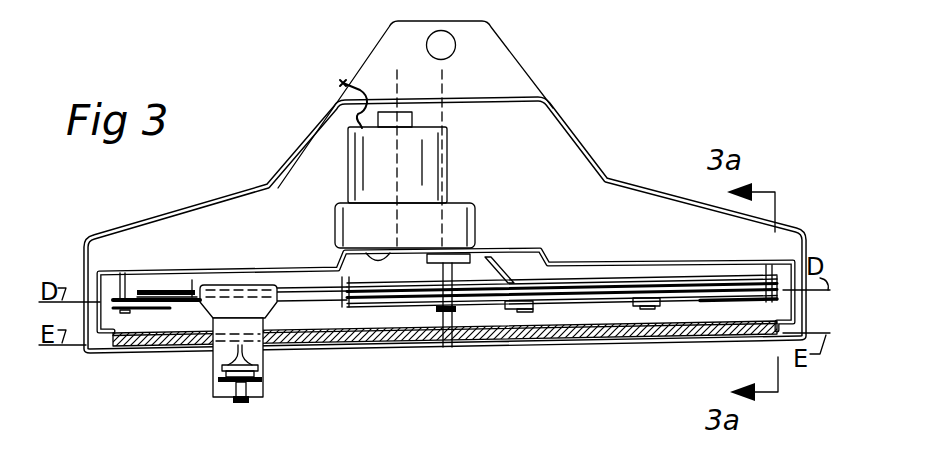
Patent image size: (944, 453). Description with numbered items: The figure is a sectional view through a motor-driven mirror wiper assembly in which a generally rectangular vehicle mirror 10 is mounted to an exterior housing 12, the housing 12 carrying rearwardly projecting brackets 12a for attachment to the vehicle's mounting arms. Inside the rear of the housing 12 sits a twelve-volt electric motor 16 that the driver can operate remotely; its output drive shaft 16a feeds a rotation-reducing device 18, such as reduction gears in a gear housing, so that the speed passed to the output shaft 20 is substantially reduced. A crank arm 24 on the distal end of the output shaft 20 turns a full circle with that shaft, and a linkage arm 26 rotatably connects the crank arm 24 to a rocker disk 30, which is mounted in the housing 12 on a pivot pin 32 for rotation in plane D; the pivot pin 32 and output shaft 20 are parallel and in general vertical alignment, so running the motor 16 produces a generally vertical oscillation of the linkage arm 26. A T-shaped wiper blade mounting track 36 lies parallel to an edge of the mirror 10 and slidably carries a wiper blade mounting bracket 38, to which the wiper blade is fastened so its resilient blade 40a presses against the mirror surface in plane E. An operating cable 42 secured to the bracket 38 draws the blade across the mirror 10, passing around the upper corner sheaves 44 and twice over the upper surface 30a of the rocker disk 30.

The vehicle mirror 10 is at (641, 346).
The exterior housing 12 is at (583, 137).
The rearwardly projecting brackets 12a is at (508, 78).
The electric motor 16 is at (413, 160).
The output drive shaft 16a is at (377, 258).
The rotation-reducing device 18 is at (448, 220).
The output shaft 20 is at (445, 262).
The crank arm 24 is at (500, 262).
The linkage arm 26 is at (569, 306).
The rocker disk 30 is at (396, 309).
The upper surface of rocker disk 30a is at (603, 283).
The pivot pin 32 is at (442, 310).
The wiper blade mounting track 36 is at (293, 295).
The wiper blade mounting bracket 38 is at (222, 325).
The resilient blade 40a is at (236, 357).
The operating cable 42 is at (84, 258).
The upper corner sheaves 44 is at (119, 288).